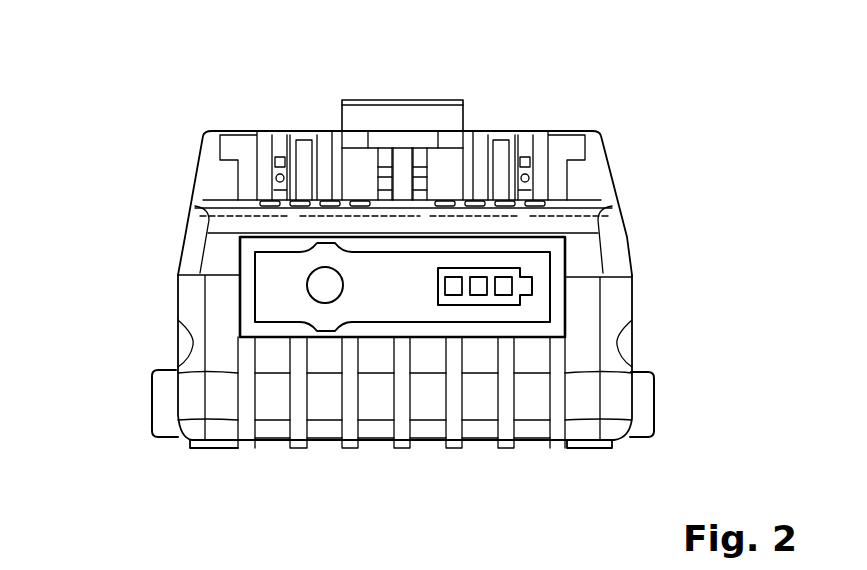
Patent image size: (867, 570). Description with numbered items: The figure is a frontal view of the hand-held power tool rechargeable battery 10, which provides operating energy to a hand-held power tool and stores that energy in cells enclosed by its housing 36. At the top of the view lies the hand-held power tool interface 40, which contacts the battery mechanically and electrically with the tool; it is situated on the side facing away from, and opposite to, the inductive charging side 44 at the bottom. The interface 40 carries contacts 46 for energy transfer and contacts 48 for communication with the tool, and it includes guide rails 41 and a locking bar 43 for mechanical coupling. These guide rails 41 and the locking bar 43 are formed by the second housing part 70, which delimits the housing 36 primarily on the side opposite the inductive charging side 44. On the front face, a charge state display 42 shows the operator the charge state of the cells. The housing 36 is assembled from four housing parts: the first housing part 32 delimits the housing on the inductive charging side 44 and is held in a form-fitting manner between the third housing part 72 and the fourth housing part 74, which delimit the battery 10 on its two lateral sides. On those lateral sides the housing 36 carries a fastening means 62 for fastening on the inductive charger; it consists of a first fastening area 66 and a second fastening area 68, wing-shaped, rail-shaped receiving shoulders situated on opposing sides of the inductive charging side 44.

The hand-held power tool rechargeable battery 10 is at (391, 266).
The housing 36 is at (674, 86).
The hand-held power tool interface 40 is at (500, 87).
The guide rails 41 is at (229, 150).
The charge state display 42 is at (549, 288).
The locking bar 43 is at (402, 110).
The inductive charging side 44 is at (376, 447).
The first housing part 32 is at (428, 448).
The contacts for energy transfer 46 is at (279, 133).
The contacts for communication 48 is at (328, 133).
The fastening means 62 is at (391, 413).
The first fastening area 66 is at (647, 403).
The second fastening area 68 is at (162, 398).
The second housing part 70 is at (598, 158).
The third housing part 72 is at (623, 367).
The fourth housing part 74 is at (190, 302).